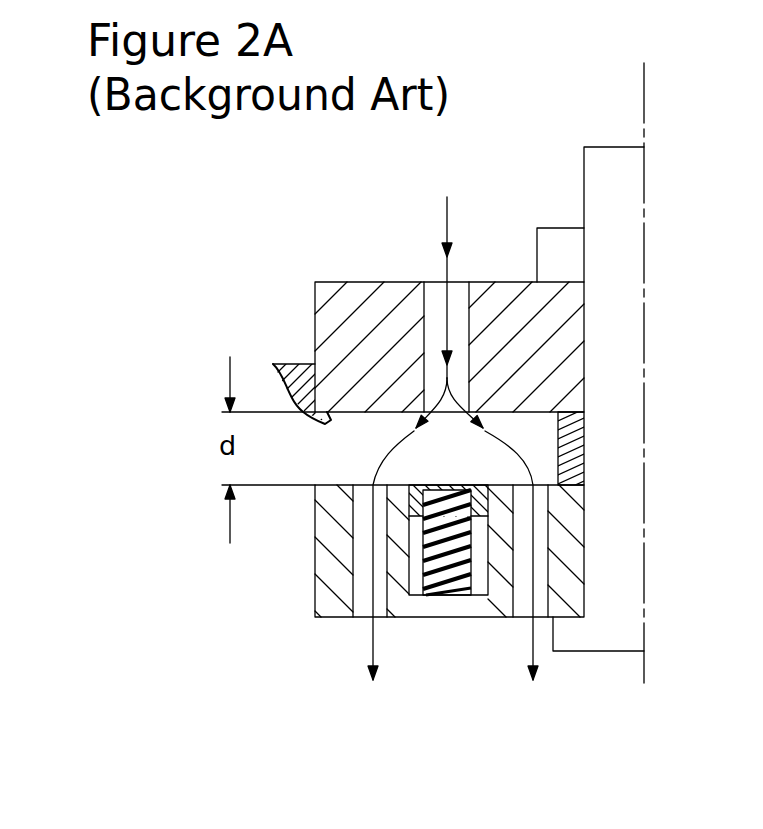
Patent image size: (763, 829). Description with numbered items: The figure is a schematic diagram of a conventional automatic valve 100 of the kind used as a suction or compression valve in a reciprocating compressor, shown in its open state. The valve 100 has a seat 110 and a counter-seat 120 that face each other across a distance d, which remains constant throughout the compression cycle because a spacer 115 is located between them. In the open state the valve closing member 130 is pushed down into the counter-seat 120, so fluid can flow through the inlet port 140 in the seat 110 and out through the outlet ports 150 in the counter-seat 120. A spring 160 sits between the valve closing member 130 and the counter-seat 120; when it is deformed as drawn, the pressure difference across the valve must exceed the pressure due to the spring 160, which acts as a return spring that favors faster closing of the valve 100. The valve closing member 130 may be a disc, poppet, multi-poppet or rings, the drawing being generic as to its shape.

The automatic valve 100 is at (318, 213).
The seat 110 is at (327, 304).
The spacer 115 is at (573, 443).
The counter-seat 120 is at (328, 582).
The valve closing member 130 is at (480, 503).
The inlet port 140 is at (455, 302).
The outlet ports 150 is at (527, 603).
The spring 160 is at (453, 548).